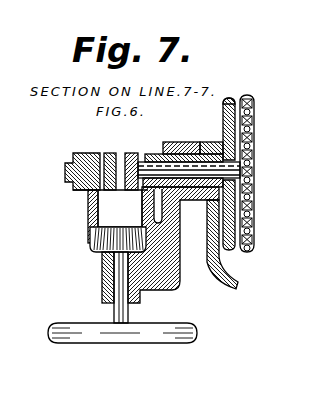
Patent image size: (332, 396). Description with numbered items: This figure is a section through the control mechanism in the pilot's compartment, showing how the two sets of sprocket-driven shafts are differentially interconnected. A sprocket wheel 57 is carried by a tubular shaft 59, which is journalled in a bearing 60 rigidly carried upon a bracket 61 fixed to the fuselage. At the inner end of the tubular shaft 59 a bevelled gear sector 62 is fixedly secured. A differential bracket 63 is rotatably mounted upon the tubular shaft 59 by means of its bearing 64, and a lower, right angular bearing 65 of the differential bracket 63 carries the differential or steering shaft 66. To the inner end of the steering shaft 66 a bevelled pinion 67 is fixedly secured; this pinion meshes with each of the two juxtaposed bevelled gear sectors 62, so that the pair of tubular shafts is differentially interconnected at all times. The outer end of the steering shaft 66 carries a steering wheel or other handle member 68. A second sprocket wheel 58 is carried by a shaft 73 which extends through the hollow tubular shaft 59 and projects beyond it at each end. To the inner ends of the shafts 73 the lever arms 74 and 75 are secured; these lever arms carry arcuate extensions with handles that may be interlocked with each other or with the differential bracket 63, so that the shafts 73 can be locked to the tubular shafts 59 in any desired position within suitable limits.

The sprocket wheel 57 is at (233, 97).
The sprocket wheel 58 is at (254, 131).
The tubular shaft 59 is at (68, 160).
The bearing 60 is at (215, 147).
The bracket 61 is at (223, 270).
The bevelled gear sector 62 is at (140, 207).
The differential bracket 63 is at (173, 285).
The bearing 64 is at (172, 149).
The right angular bearing 65 is at (100, 266).
The steering shaft 66 is at (114, 317).
The bevelled pinion 67 is at (92, 238).
The handle member 68 is at (112, 333).
The shaft 73 is at (66, 181).
The lever arm 74 is at (131, 152).
The lever arm 75 is at (111, 153).